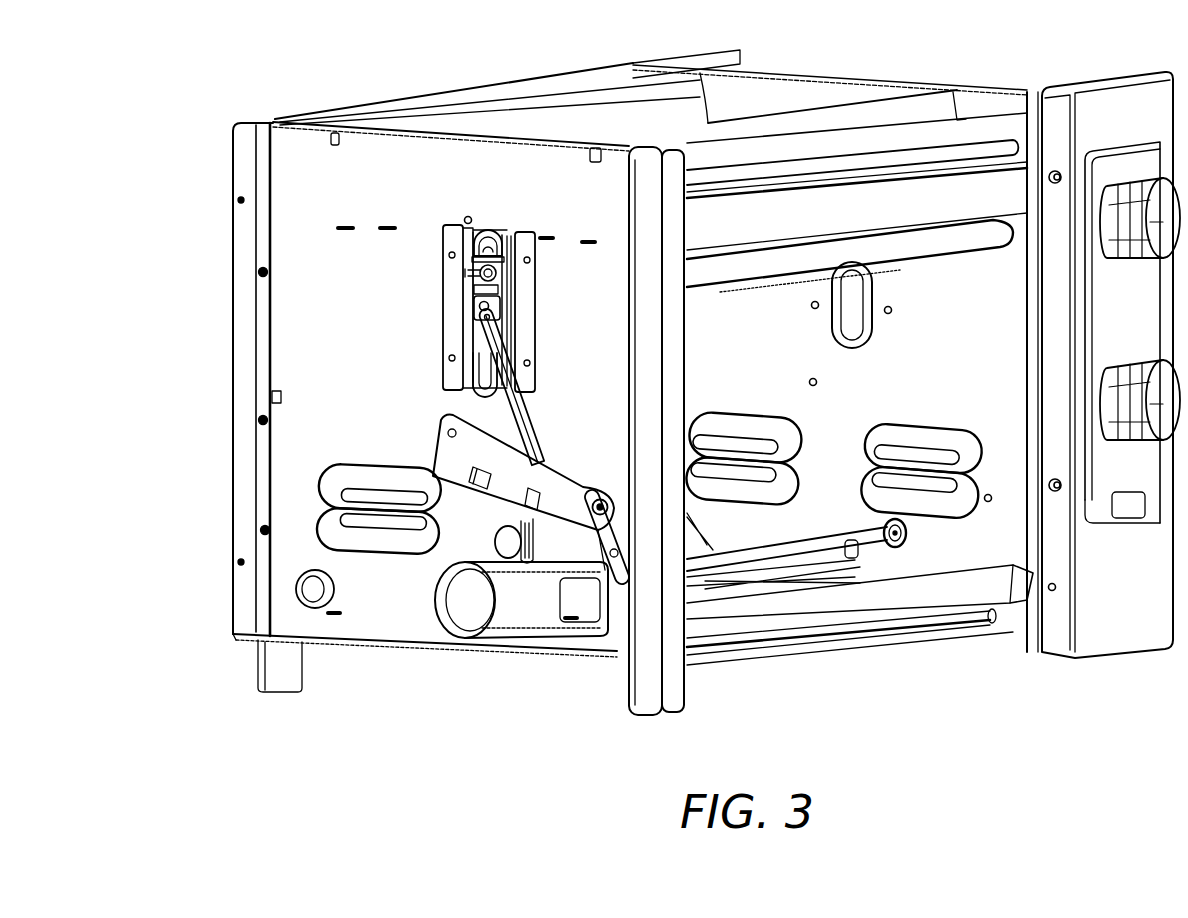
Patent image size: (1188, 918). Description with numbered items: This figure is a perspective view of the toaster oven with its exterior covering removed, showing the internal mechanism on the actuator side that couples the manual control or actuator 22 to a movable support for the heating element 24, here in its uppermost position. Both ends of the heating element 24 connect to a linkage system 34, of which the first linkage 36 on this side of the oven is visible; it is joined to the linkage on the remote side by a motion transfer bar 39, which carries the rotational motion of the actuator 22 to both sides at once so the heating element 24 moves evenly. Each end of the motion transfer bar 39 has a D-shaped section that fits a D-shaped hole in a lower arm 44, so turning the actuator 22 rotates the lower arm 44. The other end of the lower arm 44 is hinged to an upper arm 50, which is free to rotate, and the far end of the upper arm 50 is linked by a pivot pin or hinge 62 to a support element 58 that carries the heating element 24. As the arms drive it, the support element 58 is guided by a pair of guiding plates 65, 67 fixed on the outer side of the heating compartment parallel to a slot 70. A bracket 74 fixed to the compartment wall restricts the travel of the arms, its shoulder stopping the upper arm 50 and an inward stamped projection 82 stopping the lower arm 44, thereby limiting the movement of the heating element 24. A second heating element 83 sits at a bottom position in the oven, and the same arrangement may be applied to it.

The manual control or actuator 22 is at (482, 598).
The heating element 24 is at (490, 262).
The linkage system 34 is at (470, 527).
The first linkage 36 is at (528, 413).
The motion transfer bar 39 is at (891, 547).
The lower arm 44 is at (540, 503).
The upper arm 50 is at (455, 305).
The support element 58 is at (478, 232).
The pivot pin or hinge 62 is at (480, 303).
The guiding plate 65 is at (470, 318).
The guiding plate 67 is at (535, 295).
The slot 70 is at (490, 367).
The bracket 74 is at (503, 533).
The inward stamped projection 82 is at (616, 560).
The heating element 83 is at (860, 550).